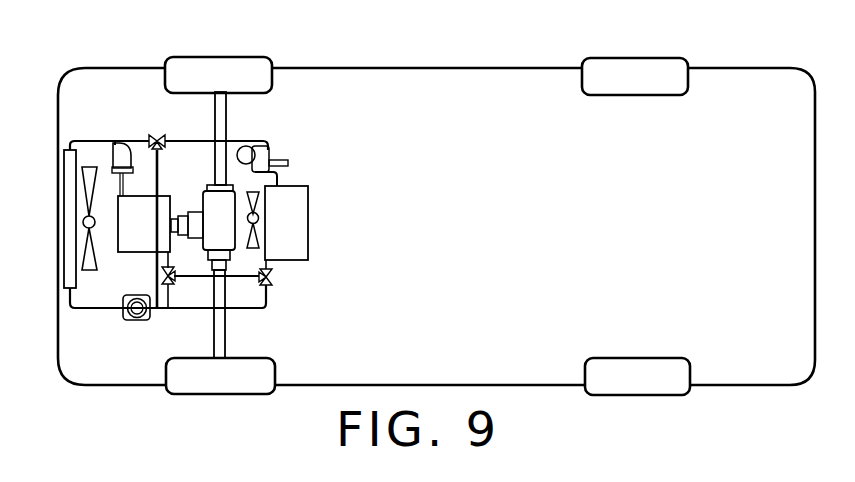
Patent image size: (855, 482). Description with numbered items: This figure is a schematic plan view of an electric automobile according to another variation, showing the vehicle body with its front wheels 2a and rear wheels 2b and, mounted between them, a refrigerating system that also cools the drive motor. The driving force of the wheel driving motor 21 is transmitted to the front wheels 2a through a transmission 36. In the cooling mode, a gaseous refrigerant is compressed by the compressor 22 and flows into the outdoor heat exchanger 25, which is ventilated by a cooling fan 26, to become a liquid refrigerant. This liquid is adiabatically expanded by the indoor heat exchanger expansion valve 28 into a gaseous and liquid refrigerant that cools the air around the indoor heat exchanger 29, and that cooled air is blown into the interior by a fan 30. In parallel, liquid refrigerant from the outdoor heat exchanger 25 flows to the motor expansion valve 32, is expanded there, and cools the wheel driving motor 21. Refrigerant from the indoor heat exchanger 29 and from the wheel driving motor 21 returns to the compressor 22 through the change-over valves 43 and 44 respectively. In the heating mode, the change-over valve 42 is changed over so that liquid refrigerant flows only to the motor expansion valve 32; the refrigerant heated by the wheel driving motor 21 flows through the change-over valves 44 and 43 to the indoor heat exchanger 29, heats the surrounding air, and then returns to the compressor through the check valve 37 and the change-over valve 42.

The front wheels 2a is at (199, 67).
The rear wheels 2b is at (662, 70).
The wheel driving motor 21 is at (138, 240).
The compressor 22 is at (130, 320).
The outdoor heat exchanger 25 is at (72, 185).
The cooling fan 26 is at (88, 260).
The indoor heat exchanger expansion valve 28 is at (277, 162).
The indoor heat exchanger 29 is at (306, 208).
The fan 30 is at (257, 244).
The motor expansion valve 32 is at (121, 142).
The transmission 36 is at (201, 198).
The check valve 37 is at (252, 162).
The change-over valve 42 is at (158, 139).
The change-over valve 43 is at (273, 287).
The change-over valve 44 is at (172, 284).